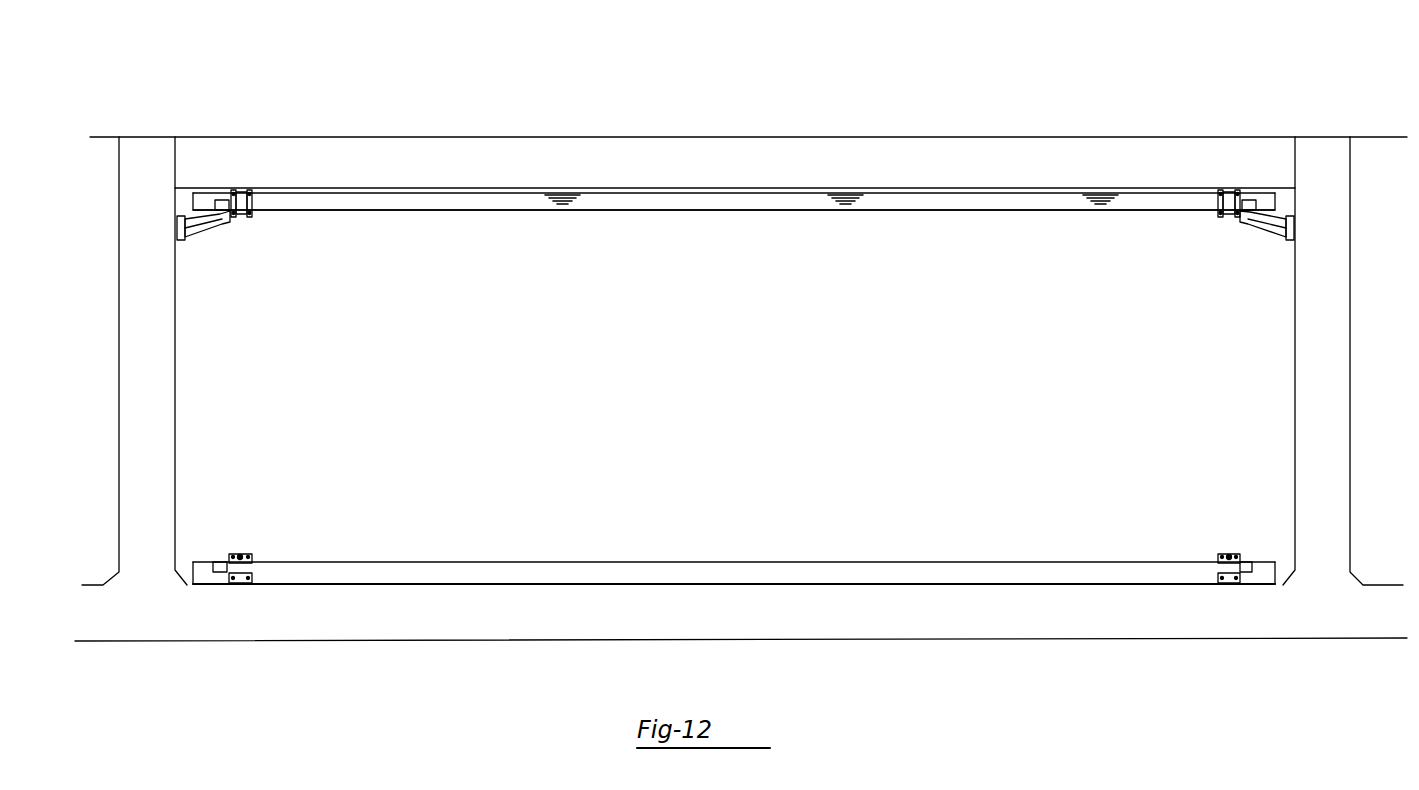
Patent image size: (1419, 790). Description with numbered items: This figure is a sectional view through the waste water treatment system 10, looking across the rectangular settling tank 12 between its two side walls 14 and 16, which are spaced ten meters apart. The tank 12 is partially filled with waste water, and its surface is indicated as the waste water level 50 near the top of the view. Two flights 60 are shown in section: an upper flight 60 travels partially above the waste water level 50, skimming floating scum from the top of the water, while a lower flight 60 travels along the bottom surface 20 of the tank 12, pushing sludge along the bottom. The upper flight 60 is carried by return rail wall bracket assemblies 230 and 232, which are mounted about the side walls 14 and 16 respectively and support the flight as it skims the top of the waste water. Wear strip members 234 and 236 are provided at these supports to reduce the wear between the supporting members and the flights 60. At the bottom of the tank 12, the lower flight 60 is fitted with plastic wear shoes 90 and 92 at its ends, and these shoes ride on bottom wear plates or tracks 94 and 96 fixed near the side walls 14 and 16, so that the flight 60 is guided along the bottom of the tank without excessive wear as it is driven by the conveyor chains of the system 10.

The waste water treatment system 10 is at (536, 106).
The settling tank 12 is at (1024, 602).
The side wall 14 is at (178, 408).
The side wall 16 is at (1293, 419).
The end wall / bottom surface 20 is at (521, 590).
The waste water level 50 is at (615, 186).
The flights 60 is at (779, 206).
The wear shoe 90 is at (240, 588).
The wear shoe 92 is at (1235, 586).
The wear plate or track 94 is at (232, 586).
The wear plate or track 96 is at (1230, 588).
The return rail wall bracket assembly 230 is at (192, 242).
The return rail wall bracket assembly 232 is at (1275, 240).
The wear strip member 234 is at (224, 213).
The wear strip member 236 is at (1250, 213).